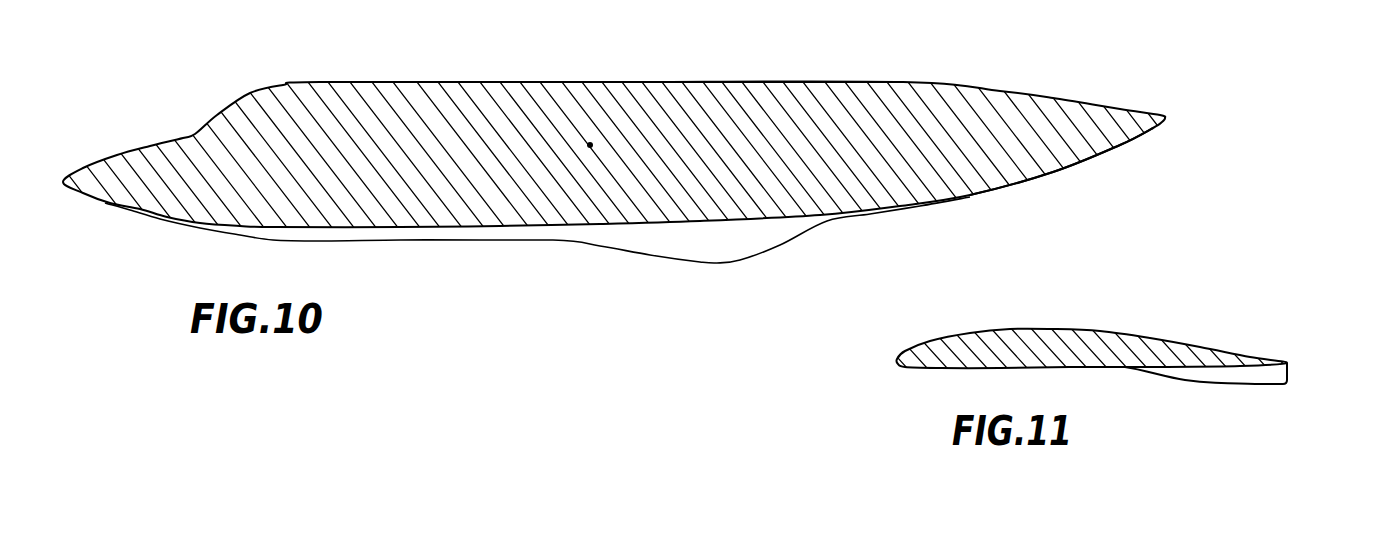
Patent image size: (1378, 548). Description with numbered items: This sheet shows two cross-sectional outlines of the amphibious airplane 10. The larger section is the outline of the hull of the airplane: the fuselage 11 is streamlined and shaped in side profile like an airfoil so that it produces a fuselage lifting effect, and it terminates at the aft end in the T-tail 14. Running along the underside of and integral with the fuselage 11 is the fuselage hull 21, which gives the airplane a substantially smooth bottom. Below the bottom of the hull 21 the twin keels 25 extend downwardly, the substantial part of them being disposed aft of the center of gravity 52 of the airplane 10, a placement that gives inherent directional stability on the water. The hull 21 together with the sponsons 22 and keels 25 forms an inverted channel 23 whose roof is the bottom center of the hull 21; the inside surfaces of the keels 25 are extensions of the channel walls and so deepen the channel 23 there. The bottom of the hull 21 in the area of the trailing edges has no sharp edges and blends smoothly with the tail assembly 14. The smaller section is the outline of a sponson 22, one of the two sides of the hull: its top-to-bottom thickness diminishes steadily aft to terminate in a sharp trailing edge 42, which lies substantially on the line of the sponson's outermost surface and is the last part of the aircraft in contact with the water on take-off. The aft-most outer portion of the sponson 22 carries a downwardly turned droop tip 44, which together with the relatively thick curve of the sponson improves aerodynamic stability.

In FIG. 10, the amphibious airplane 10 is at (215, 88).
In FIG. 10, the fuselage 11 is at (822, 81).
In FIG. 10, the T-tail 14 is at (1122, 150).
In FIG. 10, the center of gravity 52 is at (590, 144).
In FIG. 10, the fuselage hull 21 is at (413, 228).
In FIG. 10, the inverted channel 23 is at (597, 234).
In FIG. 10, the twin keels 25 is at (760, 252).
In FIG. 11, the sponson 22 is at (950, 348).
In FIG. 11, the sharp trailing edge 42 is at (1290, 360).
In FIG. 11, the droop tip 44 is at (1238, 378).